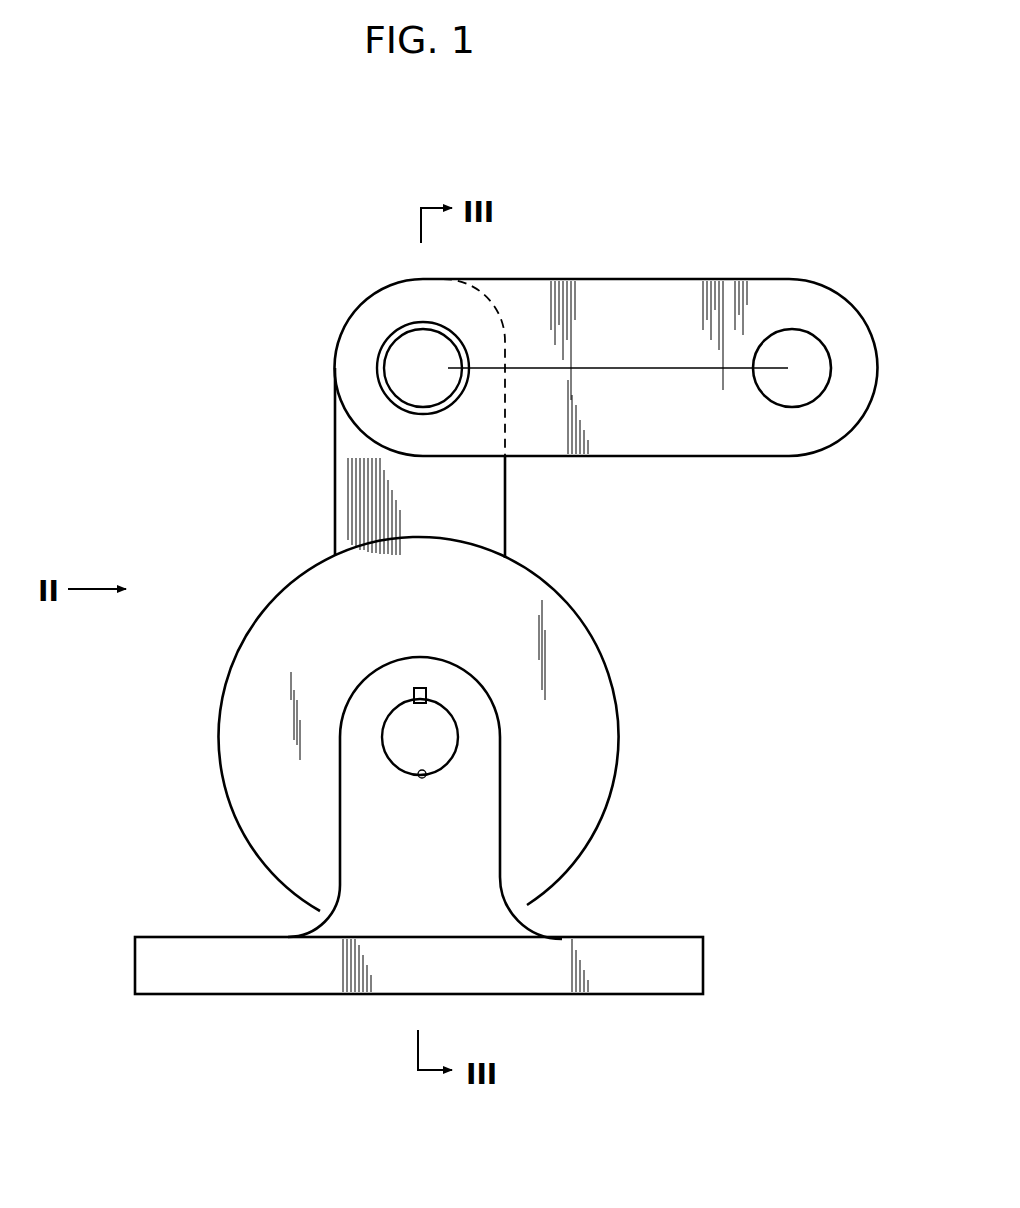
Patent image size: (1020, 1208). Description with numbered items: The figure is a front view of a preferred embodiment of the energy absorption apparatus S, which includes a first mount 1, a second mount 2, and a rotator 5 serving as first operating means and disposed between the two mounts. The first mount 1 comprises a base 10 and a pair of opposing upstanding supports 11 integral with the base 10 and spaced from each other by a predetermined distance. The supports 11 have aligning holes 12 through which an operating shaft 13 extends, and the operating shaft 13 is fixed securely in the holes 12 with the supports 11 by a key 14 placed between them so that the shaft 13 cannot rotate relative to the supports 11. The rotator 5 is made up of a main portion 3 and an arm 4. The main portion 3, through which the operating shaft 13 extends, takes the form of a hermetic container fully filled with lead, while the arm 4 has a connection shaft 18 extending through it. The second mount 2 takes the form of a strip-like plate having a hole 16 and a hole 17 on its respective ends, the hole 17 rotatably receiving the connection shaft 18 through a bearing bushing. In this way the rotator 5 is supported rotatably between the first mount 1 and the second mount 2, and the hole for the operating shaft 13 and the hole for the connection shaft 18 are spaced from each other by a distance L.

The first mount 1 is at (642, 930).
The second mount 2 is at (681, 274).
The main portion 3 is at (270, 628).
The arm 4 is at (340, 457).
The rotator 5 is at (188, 458).
The base 10 is at (197, 948).
The upstanding supports 11 is at (419, 900).
The holes 12 is at (425, 779).
The operating shaft 13 is at (434, 749).
The key 14 is at (422, 688).
The hole 16 is at (764, 393).
The hole 17 is at (437, 403).
The connection shaft 18 is at (436, 373).
The energy absorption apparatus S is at (208, 354).
The distance L is at (680, 376).